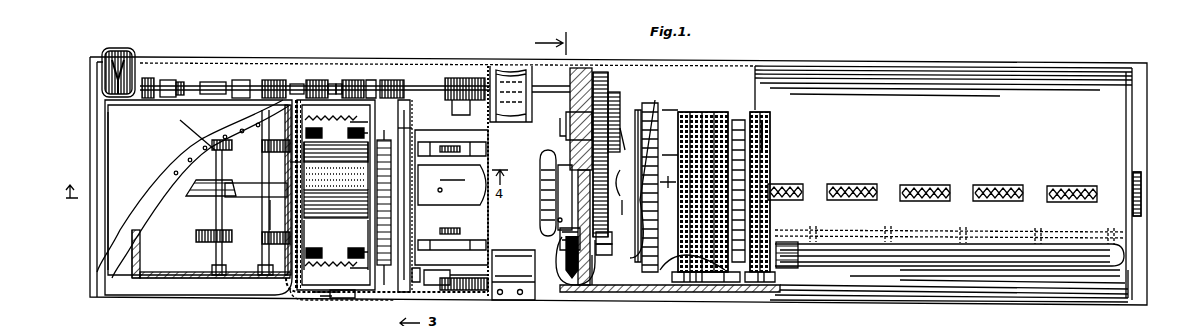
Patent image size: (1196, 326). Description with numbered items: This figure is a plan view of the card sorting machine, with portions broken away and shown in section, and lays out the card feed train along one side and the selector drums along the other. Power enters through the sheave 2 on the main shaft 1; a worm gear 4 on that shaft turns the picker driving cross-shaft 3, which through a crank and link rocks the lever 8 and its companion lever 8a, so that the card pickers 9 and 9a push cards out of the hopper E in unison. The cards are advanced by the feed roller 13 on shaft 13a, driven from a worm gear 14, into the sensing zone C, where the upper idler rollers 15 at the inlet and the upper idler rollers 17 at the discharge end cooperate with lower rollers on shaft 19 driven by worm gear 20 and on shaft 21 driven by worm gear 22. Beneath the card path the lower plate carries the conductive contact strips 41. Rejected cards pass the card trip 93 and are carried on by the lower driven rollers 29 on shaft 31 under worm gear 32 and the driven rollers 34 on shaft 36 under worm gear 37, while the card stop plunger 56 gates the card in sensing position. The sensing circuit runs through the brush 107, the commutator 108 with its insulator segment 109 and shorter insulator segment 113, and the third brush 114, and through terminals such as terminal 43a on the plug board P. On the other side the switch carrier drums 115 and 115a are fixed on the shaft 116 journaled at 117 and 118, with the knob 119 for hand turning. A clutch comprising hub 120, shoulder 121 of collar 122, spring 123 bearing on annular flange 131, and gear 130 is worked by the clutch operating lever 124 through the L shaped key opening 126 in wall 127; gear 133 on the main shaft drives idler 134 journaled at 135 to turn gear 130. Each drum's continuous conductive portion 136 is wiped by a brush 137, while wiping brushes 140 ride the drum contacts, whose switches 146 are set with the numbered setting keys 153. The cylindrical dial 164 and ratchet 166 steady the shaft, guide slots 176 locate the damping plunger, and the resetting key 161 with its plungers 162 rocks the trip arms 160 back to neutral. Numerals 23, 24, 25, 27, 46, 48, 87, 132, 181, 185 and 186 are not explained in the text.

The main shaft 1 is at (430, 85).
The sheave 2 is at (108, 58).
The picker driving cross-shaft 3 is at (470, 105).
The worm gear 4 is at (462, 80).
The lever 8 is at (448, 150).
The card picker 9 is at (476, 150).
The lever 8a is at (452, 248).
The card picker 9a is at (476, 236).
The feed roller 13 is at (408, 192).
The shaft 13a is at (380, 132).
The worm gear 14 is at (390, 80).
The upper idler rollers 15 is at (356, 206).
The upper idler rollers 17 is at (310, 206).
The shaft 19 is at (344, 80).
The worm gear 20 is at (352, 80).
The shaft 21 is at (301, 80).
The worm gear 22 is at (318, 80).
The latch 23 is at (365, 134).
The latch block 24 is at (335, 194).
The latch arm 25 is at (365, 124).
The spring 27 is at (328, 191).
The lower driven rollers 29 is at (265, 243).
The shaft 31 is at (265, 228).
The worm gear 32 is at (275, 80).
The driven rollers 34 is at (212, 238).
The shaft 36 is at (212, 253).
The worm gear 37 is at (212, 82).
The contact strips 41 is at (370, 173).
The terminal 43a is at (215, 150).
The bar 46 is at (256, 193).
The link 48 is at (296, 170).
The card stop plunger 56 is at (290, 208).
The grid 87 is at (333, 160).
The card trip 93 is at (242, 192).
The brush 107 is at (422, 290).
The commutator 108 is at (470, 292).
The insulator segment 109 is at (494, 270).
The insulator segment 113 is at (486, 250).
The third brush 114 is at (440, 290).
The switch carrier drum 115 is at (676, 115).
The switch carrier drum 115a is at (766, 108).
The shaft 116 is at (670, 178).
The journal 117 is at (566, 170).
The journal 118 is at (1140, 178).
The knob 119 is at (555, 163).
The hub 120 is at (624, 183).
The shoulder 121 is at (626, 205).
The collar 122 is at (626, 146).
The spring 123 is at (548, 176).
The clutch operating lever 124 is at (605, 237).
The L shaped key opening 126 is at (596, 266).
The wall 127 is at (580, 290).
The gear 130 is at (630, 150).
The annular flange 131 is at (574, 232).
The block 132 is at (600, 245).
The gear 133 is at (596, 68).
The idler 134 is at (610, 128).
The journal 135 is at (568, 124).
The continuous conductive portion 136 is at (726, 115).
The brush 137 is at (724, 275).
The wiping brushes 140 is at (764, 275).
The switches 146 is at (768, 146).
The numbered setting keys 153 is at (1052, 182).
The trip arm 160 is at (740, 120).
The resetting key 161 is at (855, 258).
The plungers 162 is at (1040, 226).
The cylindrical dial 164 is at (650, 103).
The ratchet 166 is at (640, 280).
The guide slots 176 is at (343, 308).
The frame 181 is at (278, 284).
The spring 185 is at (335, 80).
The block 186 is at (345, 296).
The sensing zone C is at (336, 201).
The hopper E is at (451, 197).
The plug board P is at (193, 189).